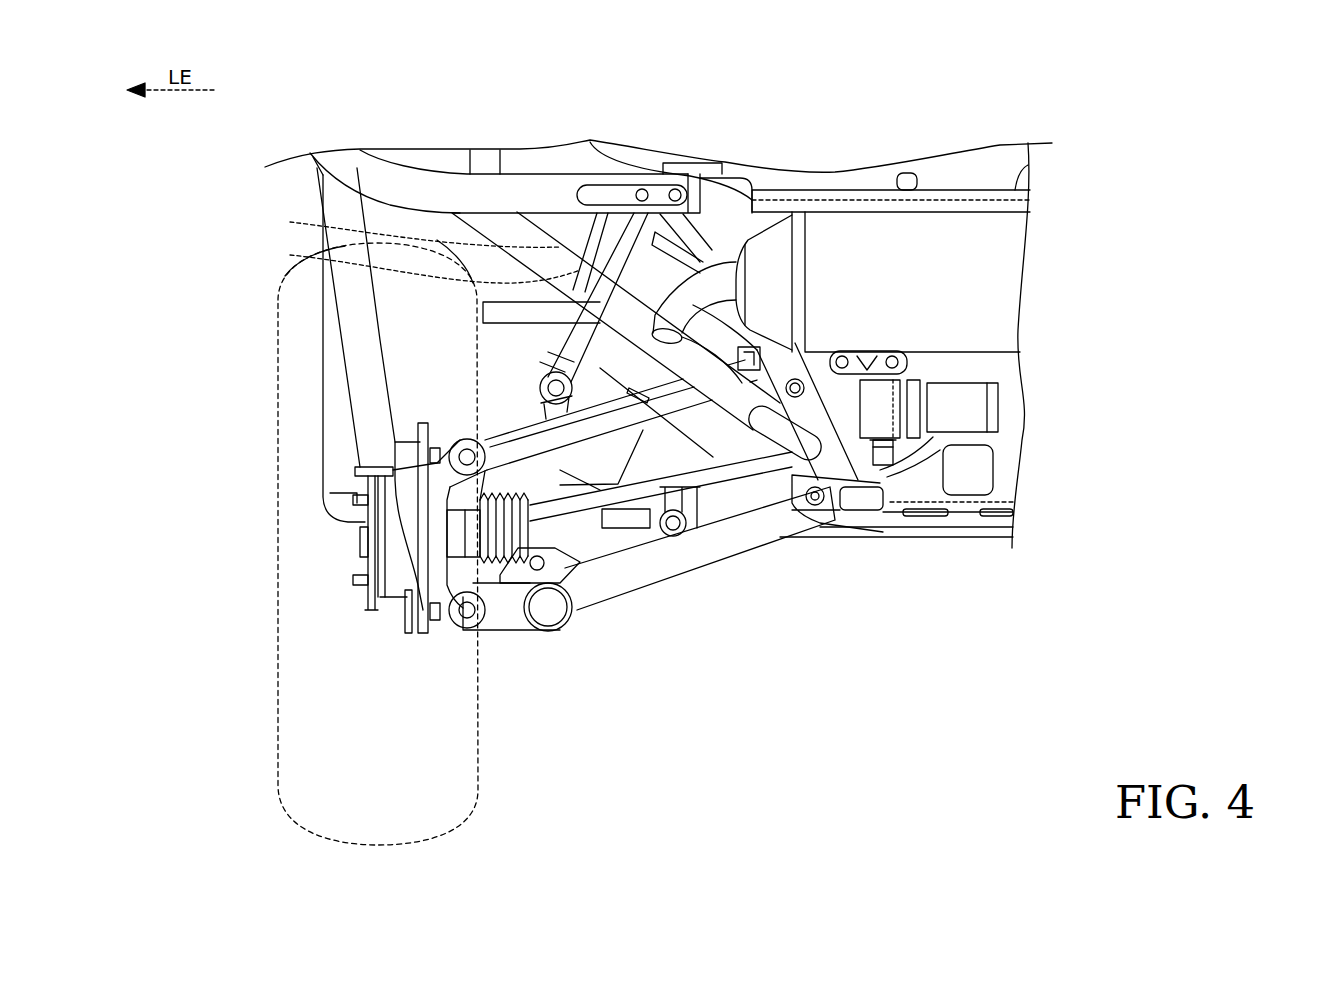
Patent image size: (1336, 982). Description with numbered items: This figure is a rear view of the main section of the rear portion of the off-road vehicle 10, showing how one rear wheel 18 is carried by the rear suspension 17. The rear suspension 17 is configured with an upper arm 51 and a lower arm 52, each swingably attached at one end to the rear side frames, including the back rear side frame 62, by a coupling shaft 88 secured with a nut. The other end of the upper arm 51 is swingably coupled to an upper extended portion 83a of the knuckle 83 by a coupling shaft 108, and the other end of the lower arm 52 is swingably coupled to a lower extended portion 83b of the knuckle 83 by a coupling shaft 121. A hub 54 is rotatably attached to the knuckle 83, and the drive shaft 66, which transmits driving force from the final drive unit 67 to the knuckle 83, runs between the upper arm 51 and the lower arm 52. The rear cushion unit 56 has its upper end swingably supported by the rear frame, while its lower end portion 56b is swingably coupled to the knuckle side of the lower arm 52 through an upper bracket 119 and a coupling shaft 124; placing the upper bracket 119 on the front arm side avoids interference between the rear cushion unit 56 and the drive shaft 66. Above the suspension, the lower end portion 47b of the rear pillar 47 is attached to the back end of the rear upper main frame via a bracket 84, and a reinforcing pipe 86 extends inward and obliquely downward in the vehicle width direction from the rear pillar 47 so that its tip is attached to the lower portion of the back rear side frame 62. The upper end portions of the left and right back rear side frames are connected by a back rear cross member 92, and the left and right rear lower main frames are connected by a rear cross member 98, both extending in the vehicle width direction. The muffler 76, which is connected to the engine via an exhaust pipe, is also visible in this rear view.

The off-road vehicle 10 is at (250, 307).
The rear suspension 17 is at (745, 675).
The rear wheel 18 is at (305, 710).
The rear pillar 47 is at (313, 178).
The lower end portion 47b is at (410, 240).
The upper arm 51 is at (695, 440).
The lower arm 52 is at (620, 545).
The hub 54 is at (370, 597).
The rear cushion unit 56 is at (625, 490).
The lower end portion 56b is at (590, 500).
The back rear side frame 62 is at (836, 486).
The drive shaft 66 is at (678, 537).
The final drive unit 67 is at (958, 385).
The muffler 76 is at (943, 240).
The knuckle 83 is at (443, 613).
The upper extended portion 83a is at (450, 470).
The lower extended portion 83b is at (517, 580).
The bracket 84 is at (697, 195).
The reinforcing pipe 86 is at (548, 255).
The coupling shaft 88 is at (807, 378).
The back rear cross member 92 is at (993, 190).
The rear cross member 98 is at (1010, 482).
The coupling shaft 108 is at (462, 437).
The upper bracket 119 is at (535, 612).
The coupling shaft 121 is at (467, 632).
The coupling shaft 124 is at (552, 617).